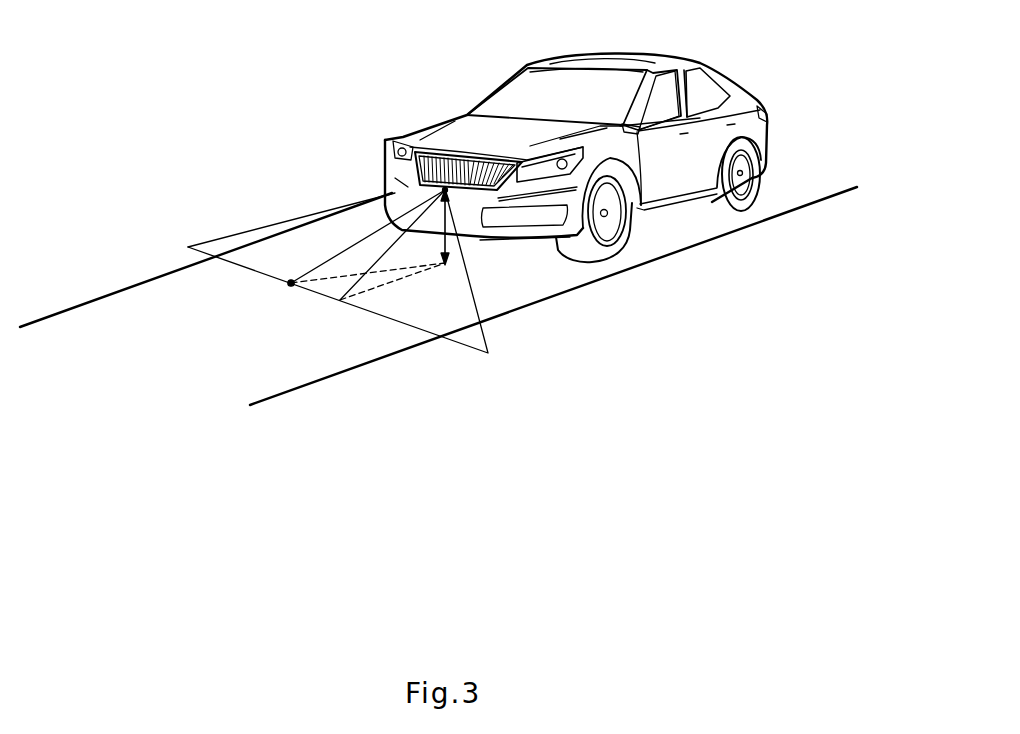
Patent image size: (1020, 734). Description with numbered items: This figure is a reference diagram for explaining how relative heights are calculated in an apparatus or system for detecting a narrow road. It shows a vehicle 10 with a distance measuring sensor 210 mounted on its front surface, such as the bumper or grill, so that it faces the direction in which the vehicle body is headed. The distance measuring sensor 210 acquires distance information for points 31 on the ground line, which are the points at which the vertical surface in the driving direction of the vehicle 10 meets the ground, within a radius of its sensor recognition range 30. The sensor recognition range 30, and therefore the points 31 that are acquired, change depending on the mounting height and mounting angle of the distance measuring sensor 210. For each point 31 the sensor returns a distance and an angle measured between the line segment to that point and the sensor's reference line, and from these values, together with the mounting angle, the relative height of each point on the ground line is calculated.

The vehicle 10 is at (590, 56).
The distance measuring sensor 210 is at (405, 138).
The sensor recognition range 30 is at (233, 240).
The points on the ground line 31 is at (289, 285).